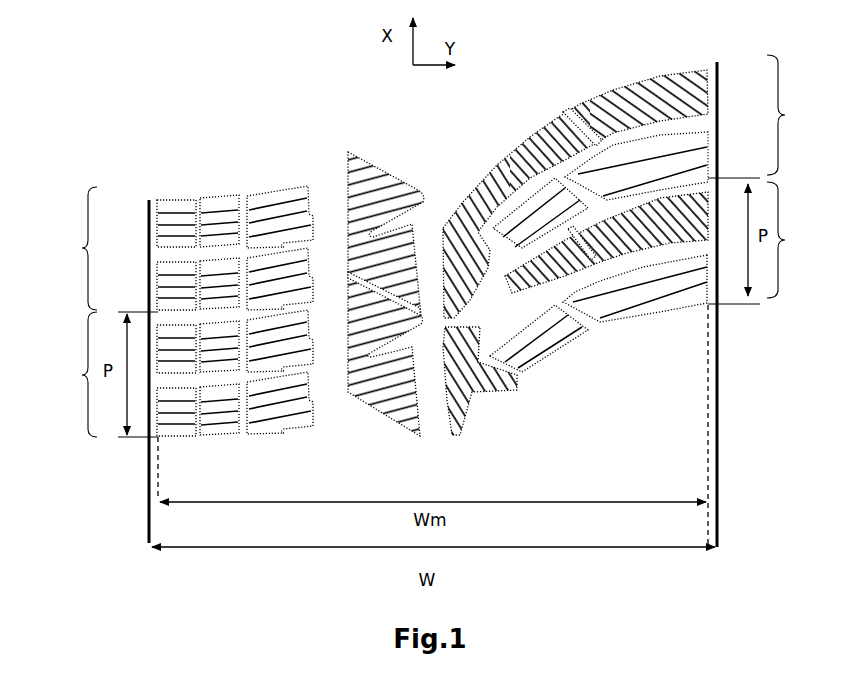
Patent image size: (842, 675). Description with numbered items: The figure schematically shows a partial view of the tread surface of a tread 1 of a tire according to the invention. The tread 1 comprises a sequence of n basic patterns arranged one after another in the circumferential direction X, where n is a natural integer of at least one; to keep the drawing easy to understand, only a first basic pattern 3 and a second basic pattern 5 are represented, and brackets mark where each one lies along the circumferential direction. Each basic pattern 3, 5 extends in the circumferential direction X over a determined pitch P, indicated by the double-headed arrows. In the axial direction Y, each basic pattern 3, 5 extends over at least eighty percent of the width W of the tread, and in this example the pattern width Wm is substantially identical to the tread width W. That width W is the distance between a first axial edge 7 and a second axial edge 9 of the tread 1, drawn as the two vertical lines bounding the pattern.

The tread 1 is at (320, 126).
The first basic pattern 3 is at (429, 309).
The second basic pattern 5 is at (428, 182).
The first axial edge 7 is at (145, 198).
The second axial edge 9 is at (722, 75).